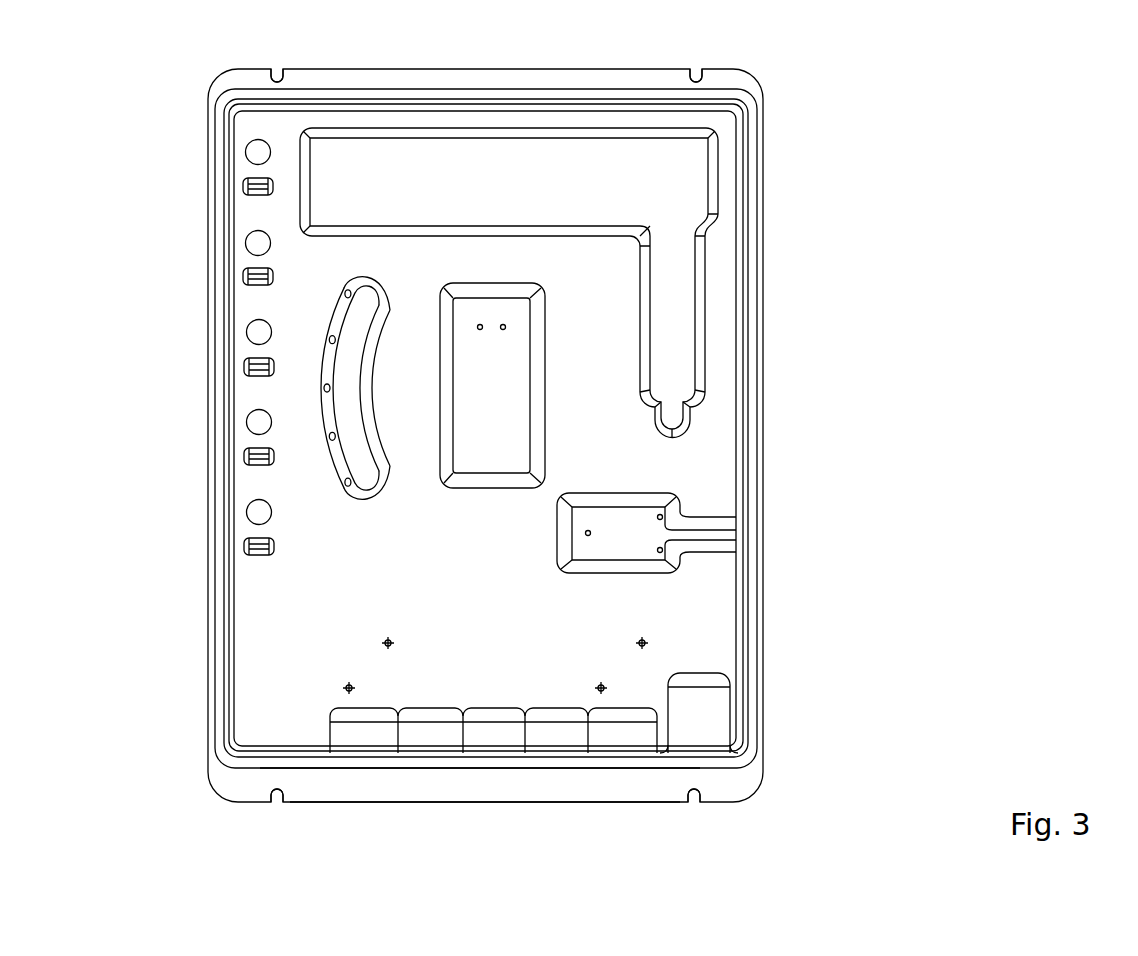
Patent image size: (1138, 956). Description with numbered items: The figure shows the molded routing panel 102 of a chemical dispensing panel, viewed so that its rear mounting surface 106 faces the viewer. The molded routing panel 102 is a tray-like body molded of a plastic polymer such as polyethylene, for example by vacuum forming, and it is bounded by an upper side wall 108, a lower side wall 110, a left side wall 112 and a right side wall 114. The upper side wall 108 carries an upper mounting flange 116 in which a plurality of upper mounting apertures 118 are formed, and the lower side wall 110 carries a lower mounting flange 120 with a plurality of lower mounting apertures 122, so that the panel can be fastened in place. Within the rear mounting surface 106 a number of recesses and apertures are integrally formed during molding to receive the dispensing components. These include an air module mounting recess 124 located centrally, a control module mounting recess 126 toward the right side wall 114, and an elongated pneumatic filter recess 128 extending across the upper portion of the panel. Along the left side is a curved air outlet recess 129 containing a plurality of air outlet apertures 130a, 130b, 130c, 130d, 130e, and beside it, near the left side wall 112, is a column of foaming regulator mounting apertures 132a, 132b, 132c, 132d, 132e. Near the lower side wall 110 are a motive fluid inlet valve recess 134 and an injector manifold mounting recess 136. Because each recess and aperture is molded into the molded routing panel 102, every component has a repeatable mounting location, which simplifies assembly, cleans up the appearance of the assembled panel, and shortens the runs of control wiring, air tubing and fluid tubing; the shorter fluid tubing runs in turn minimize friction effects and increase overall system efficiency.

The molded routing panel 102 is at (848, 262).
The rear mounting surface 106 is at (710, 462).
The upper side wall 108 is at (481, 102).
The lower side wall 110 is at (430, 760).
The left side wall 112 is at (748, 372).
The right side wall 114 is at (229, 382).
The upper mounting flange 116 is at (600, 82).
The upper mounting apertures 118 is at (279, 80).
The lower mounting flange 120 is at (362, 792).
The lower mounting apertures 122 is at (275, 792).
The air module mounting recess 124 is at (515, 355).
The control module mounting recess 126 is at (645, 537).
The pneumatic filter recess 128 is at (696, 178).
The air outlet recess 129 is at (374, 300).
The air outlet aperture 130a is at (346, 294).
The air outlet aperture 130b is at (330, 340).
The air outlet aperture 130c is at (324, 388).
The air outlet aperture 130d is at (330, 438).
The air outlet aperture 130e is at (346, 484).
The foaming regulator mounting aperture 132a is at (256, 153).
The foaming regulator mounting aperture 132b is at (256, 243).
The foaming regulator mounting aperture 132c is at (257, 333).
The foaming regulator mounting aperture 132d is at (257, 425).
The foaming regulator mounting aperture 132e is at (257, 515).
The motive fluid inlet valve recess 134 is at (712, 722).
The injector manifold mounting recess 136 is at (560, 745).